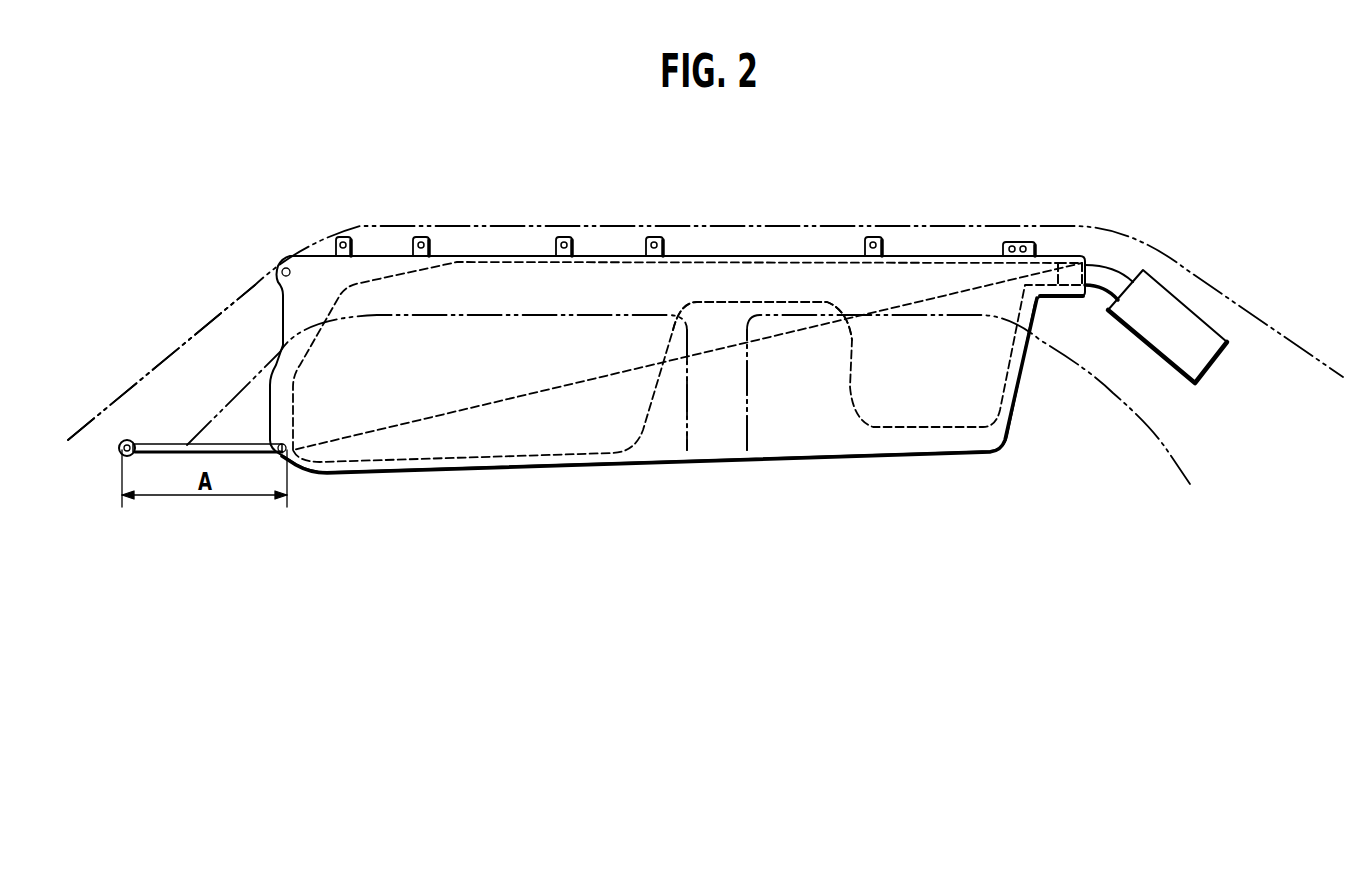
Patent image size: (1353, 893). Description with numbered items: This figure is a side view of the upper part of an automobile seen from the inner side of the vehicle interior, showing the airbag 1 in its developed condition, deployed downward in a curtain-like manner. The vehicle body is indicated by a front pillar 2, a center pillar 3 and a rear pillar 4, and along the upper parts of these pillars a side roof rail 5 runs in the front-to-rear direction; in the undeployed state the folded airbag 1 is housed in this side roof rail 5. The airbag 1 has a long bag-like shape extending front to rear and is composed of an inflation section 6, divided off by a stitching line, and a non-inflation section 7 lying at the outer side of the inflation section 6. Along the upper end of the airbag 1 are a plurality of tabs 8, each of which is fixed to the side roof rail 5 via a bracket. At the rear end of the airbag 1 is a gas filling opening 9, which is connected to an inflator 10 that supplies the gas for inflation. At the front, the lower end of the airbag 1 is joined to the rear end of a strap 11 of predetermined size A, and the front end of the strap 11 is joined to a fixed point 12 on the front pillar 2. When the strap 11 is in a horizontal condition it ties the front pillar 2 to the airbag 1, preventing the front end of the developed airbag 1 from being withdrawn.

The airbag 1 is at (772, 250).
The front pillar 2 is at (230, 285).
The center pillar 3 is at (685, 415).
The rear pillar 4 is at (1135, 417).
The side roof rail 5 is at (477, 225).
The inflation section 6 is at (462, 433).
The non-inflation section 7 is at (807, 428).
The tab 8 is at (343, 237).
The gas filling opening 9 is at (1073, 257).
The inflator 10 is at (1175, 297).
The strap 11 is at (163, 500).
The fixed point 12 is at (120, 452).